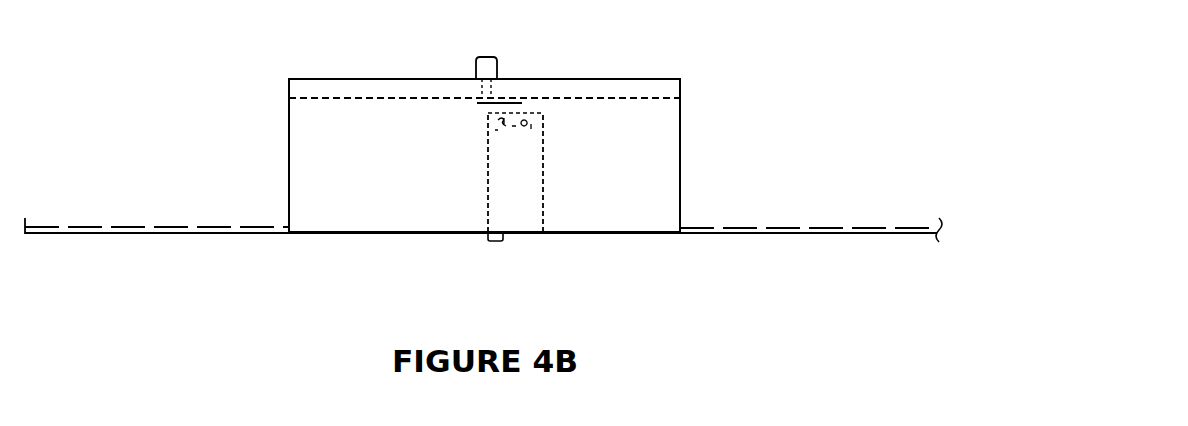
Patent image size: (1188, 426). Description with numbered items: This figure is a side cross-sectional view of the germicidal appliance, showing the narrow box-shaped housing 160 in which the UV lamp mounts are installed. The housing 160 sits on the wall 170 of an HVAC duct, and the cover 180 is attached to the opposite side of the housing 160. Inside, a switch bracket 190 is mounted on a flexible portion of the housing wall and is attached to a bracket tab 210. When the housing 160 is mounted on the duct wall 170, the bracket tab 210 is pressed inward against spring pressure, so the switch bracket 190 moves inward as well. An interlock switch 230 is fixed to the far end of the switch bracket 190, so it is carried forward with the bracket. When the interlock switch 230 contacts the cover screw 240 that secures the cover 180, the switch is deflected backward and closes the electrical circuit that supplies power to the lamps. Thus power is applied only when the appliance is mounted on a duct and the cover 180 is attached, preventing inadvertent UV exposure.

The housing 160 is at (287, 200).
The duct wall 170 is at (34, 234).
The cover 180 is at (643, 77).
The switch bracket 190 is at (549, 188).
The bracket tab 210 is at (509, 244).
The interlock switch 230 is at (539, 120).
The cover screw 240 is at (474, 62).